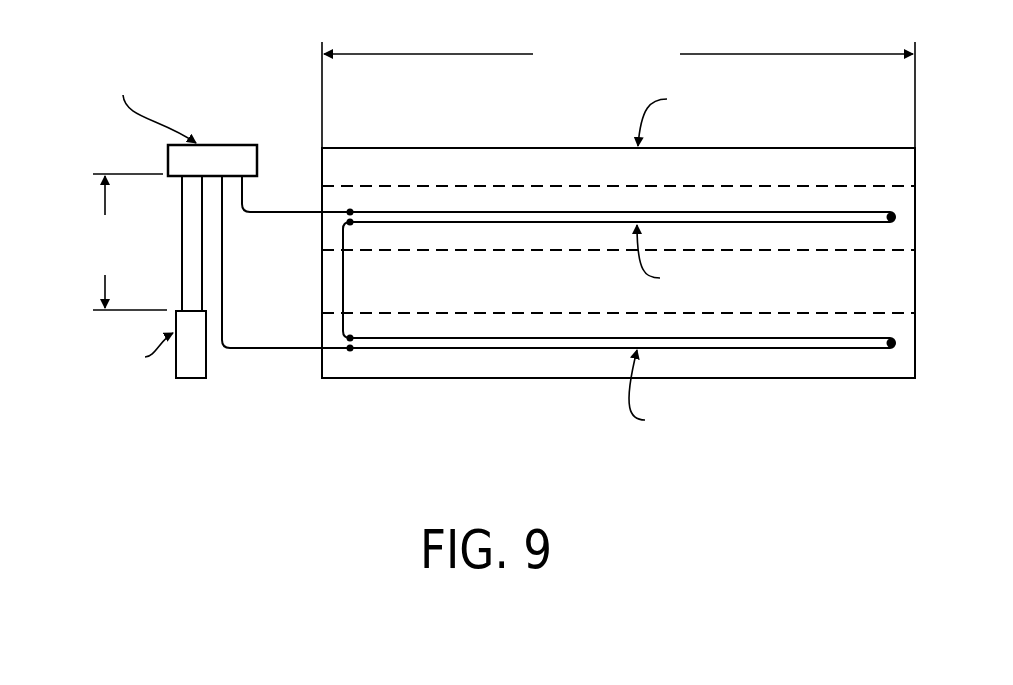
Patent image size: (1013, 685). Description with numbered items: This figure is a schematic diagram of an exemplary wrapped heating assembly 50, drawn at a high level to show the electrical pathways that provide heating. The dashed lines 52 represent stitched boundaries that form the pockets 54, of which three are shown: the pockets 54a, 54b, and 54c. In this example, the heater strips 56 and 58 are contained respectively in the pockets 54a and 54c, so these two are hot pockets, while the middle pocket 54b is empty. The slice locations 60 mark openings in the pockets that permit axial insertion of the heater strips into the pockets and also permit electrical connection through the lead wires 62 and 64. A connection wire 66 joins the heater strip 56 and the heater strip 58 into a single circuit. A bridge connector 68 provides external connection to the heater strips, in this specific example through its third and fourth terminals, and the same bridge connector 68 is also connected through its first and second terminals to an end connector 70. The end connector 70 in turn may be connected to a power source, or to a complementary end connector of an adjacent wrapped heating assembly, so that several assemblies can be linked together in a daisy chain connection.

The wrapped heating assembly 50 is at (469, 126).
The dashed lines 52 is at (357, 186).
The pockets 54 is at (278, 202).
The pocket 54a is at (322, 197).
The pocket 54b is at (320, 282).
The pocket 54c is at (322, 328).
The heater strip 56 is at (560, 212).
The heater strip 58 is at (557, 349).
The slice locations 60 is at (351, 352).
The lead wire 62 is at (271, 212).
The lead wire 64 is at (233, 350).
The connection wire 66 is at (343, 289).
The bridge connector 68 is at (168, 157).
The end connector 70 is at (179, 378).